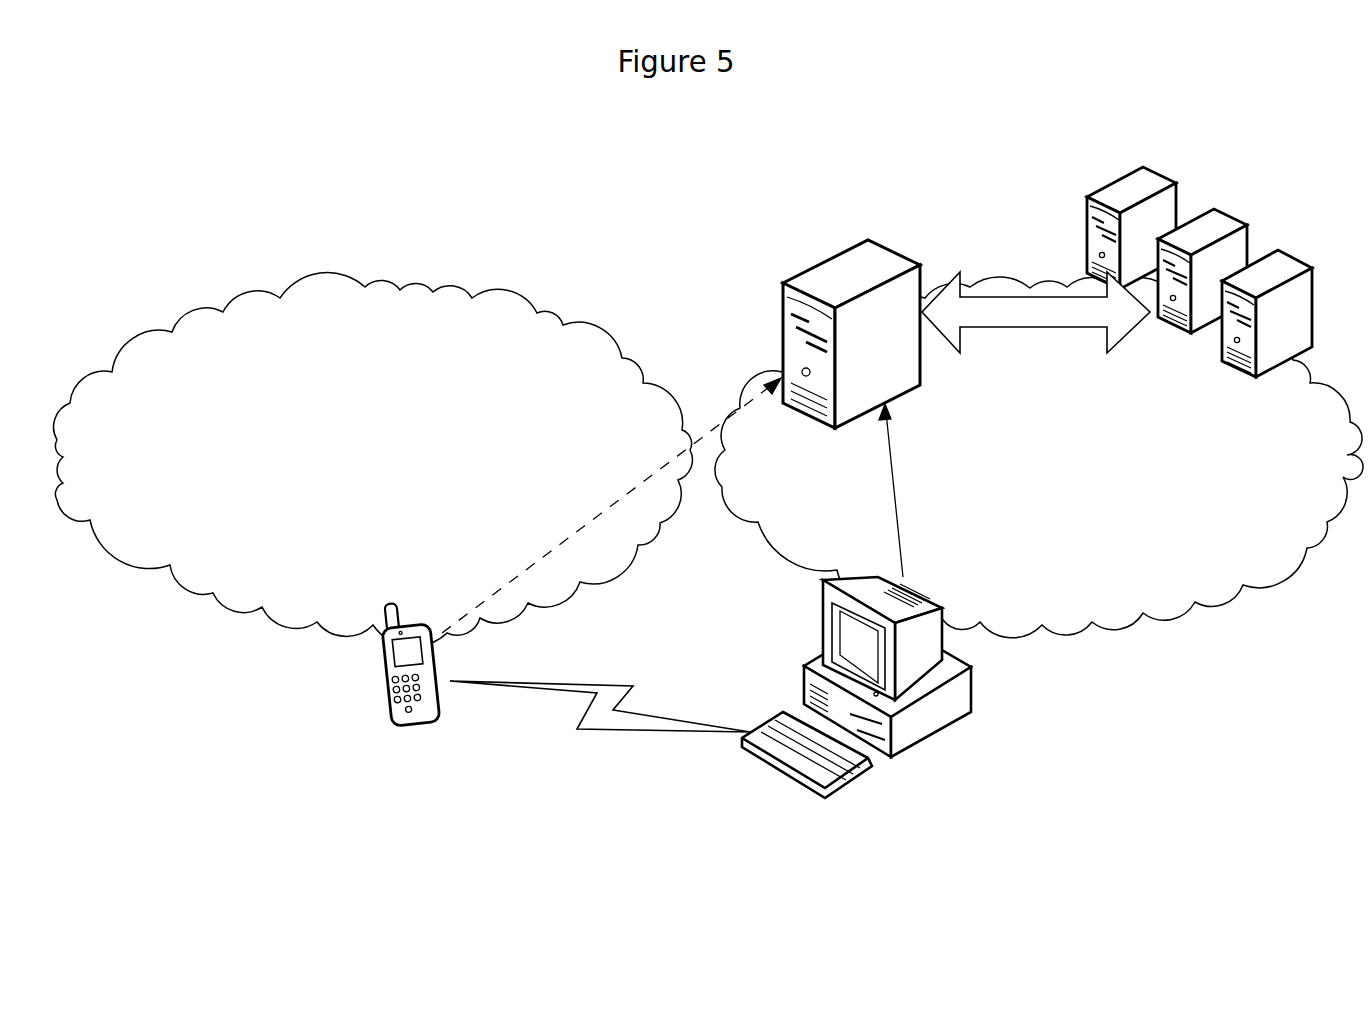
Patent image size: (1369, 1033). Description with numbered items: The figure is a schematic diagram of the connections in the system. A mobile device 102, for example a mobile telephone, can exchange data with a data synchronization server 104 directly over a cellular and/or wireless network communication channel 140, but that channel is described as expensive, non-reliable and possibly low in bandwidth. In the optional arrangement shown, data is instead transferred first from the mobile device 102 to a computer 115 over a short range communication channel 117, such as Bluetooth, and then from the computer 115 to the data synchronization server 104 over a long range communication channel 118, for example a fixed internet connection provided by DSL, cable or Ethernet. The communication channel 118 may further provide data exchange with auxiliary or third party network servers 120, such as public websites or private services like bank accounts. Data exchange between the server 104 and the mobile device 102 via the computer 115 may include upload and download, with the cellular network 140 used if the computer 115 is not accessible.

The mobile device 102 is at (409, 700).
The data synchronization server 104 is at (846, 290).
The computer 115 is at (856, 621).
The short range communication channel 117 is at (600, 737).
The long range communication channel 118 is at (1039, 457).
The third party network servers 120 is at (1142, 255).
The cellular/wireless network communication channel 140 is at (373, 460).